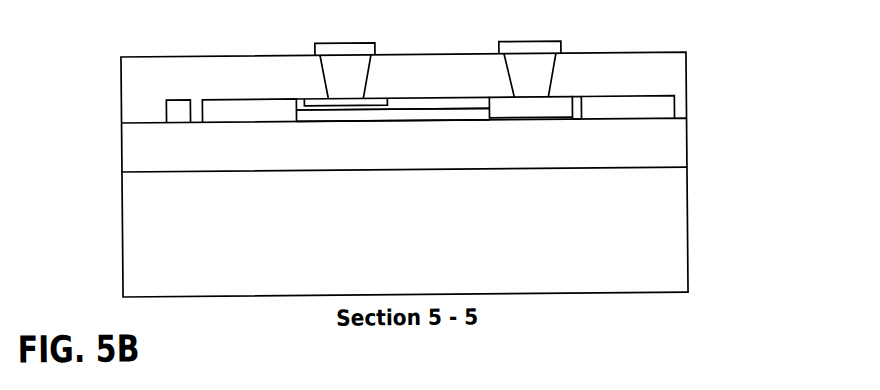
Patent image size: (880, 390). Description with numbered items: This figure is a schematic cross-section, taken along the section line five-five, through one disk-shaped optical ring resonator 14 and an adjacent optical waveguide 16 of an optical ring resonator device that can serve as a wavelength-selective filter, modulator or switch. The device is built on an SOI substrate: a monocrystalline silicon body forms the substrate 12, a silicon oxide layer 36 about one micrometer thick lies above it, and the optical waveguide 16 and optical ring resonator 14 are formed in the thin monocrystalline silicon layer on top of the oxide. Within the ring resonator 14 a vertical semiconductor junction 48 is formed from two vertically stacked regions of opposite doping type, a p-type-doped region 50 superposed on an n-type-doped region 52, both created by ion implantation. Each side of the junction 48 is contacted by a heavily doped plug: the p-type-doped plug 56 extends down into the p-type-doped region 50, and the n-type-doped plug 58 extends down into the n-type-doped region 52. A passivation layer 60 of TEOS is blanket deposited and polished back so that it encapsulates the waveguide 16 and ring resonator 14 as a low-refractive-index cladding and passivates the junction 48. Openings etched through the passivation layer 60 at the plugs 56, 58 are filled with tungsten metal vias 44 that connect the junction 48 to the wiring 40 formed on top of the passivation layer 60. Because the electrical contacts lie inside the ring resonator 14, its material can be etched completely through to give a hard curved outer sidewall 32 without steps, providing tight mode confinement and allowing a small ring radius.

The substrate 12 is at (153, 268).
The optical ring resonator 14 is at (238, 99).
The optical waveguide 16 is at (167, 101).
The outer sidewall 32 is at (675, 113).
The silicon oxide layer 36 is at (153, 156).
The wiring 40 is at (345, 45).
The metal vias 44 is at (336, 87).
The vertical semiconductor junction 48 is at (582, 101).
The p-type-doped region 50 is at (433, 102).
The n-type-doped region 52 is at (436, 120).
The p-type-doped plug 56 is at (312, 99).
The n-type-doped plug 58 is at (565, 100).
The passivation layer 60 is at (122, 85).